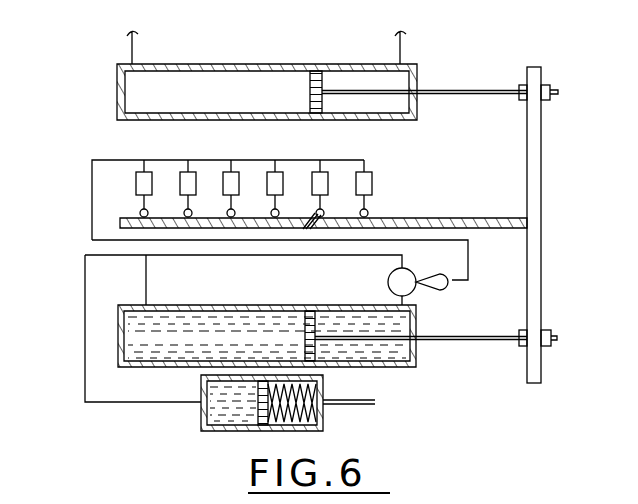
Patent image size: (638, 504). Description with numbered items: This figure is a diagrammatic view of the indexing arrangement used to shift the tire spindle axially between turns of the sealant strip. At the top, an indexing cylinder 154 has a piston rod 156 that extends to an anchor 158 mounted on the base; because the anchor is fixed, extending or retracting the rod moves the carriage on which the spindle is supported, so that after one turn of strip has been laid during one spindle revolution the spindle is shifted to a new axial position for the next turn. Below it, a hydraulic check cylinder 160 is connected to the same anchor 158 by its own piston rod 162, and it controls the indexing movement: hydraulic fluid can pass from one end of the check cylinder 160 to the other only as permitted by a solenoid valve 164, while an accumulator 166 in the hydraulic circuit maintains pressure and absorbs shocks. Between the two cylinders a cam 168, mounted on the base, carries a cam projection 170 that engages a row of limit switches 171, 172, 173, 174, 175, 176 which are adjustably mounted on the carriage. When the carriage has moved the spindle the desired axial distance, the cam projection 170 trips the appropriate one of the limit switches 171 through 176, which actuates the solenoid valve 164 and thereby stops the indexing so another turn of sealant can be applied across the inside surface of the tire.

The indexing cylinder 154 is at (250, 63).
The piston rod 156 is at (456, 90).
The anchor 158 is at (537, 165).
The hydraulic check cylinder 160 is at (410, 365).
The piston rod 162 is at (458, 337).
The solenoid valve 164 is at (388, 282).
The accumulator 166 is at (228, 431).
The cam 168 is at (120, 222).
The cam projection 170 is at (326, 218).
The limit switch 171 is at (366, 177).
The limit switch 172 is at (322, 177).
The limit switch 173 is at (277, 177).
The limit switch 174 is at (233, 177).
The limit switch 175 is at (190, 177).
The limit switch 176 is at (146, 177).